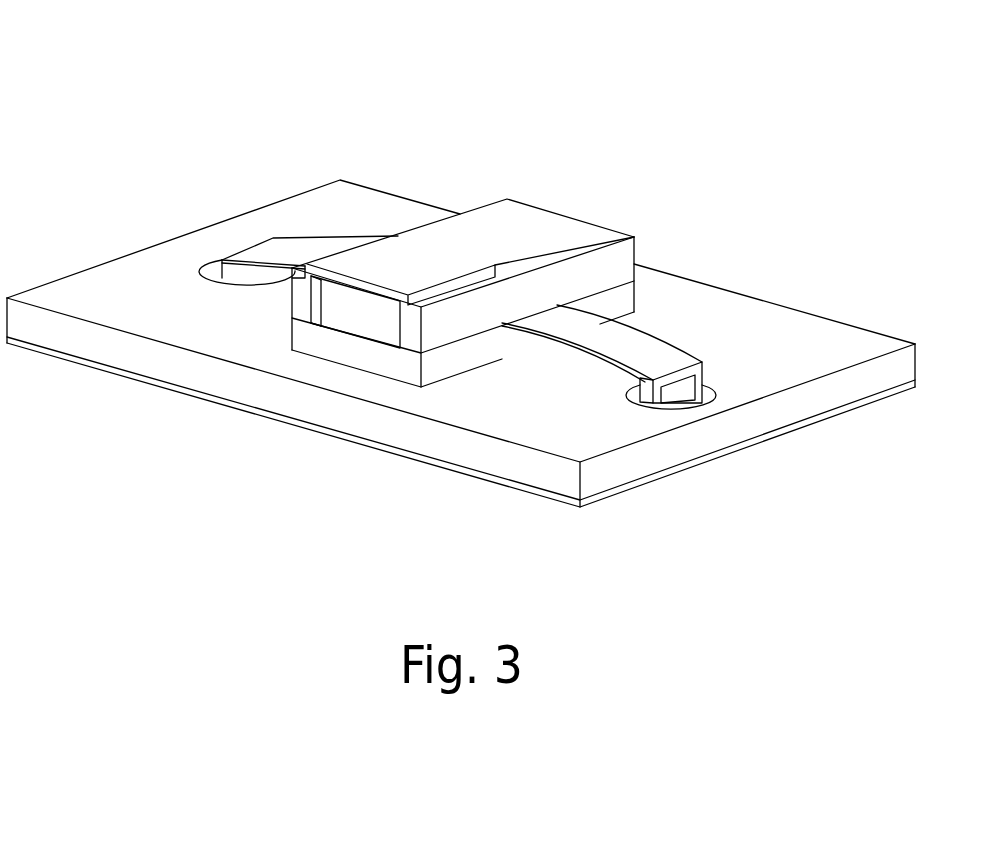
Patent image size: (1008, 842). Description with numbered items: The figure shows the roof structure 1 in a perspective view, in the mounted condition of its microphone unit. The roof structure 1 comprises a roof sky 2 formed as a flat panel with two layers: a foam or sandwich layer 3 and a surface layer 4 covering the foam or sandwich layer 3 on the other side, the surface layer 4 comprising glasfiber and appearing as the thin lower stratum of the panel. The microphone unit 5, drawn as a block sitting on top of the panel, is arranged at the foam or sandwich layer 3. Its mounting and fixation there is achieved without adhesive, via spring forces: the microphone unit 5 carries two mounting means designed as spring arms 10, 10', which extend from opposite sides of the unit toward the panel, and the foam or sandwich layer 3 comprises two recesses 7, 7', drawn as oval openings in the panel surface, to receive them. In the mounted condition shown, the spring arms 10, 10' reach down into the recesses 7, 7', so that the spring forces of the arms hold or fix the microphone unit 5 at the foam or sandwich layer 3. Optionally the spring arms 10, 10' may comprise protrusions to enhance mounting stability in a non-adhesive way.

The roof structure 1 is at (522, 110).
The roof sky 2 is at (230, 180).
The foam or sandwich layer 3 is at (873, 380).
The surface layer 4 is at (630, 485).
The microphone unit 5 is at (552, 220).
The recess 7 is at (692, 469).
The recess 7' is at (202, 209).
The spring arm 10 is at (636, 311).
The spring arm 10' is at (310, 195).